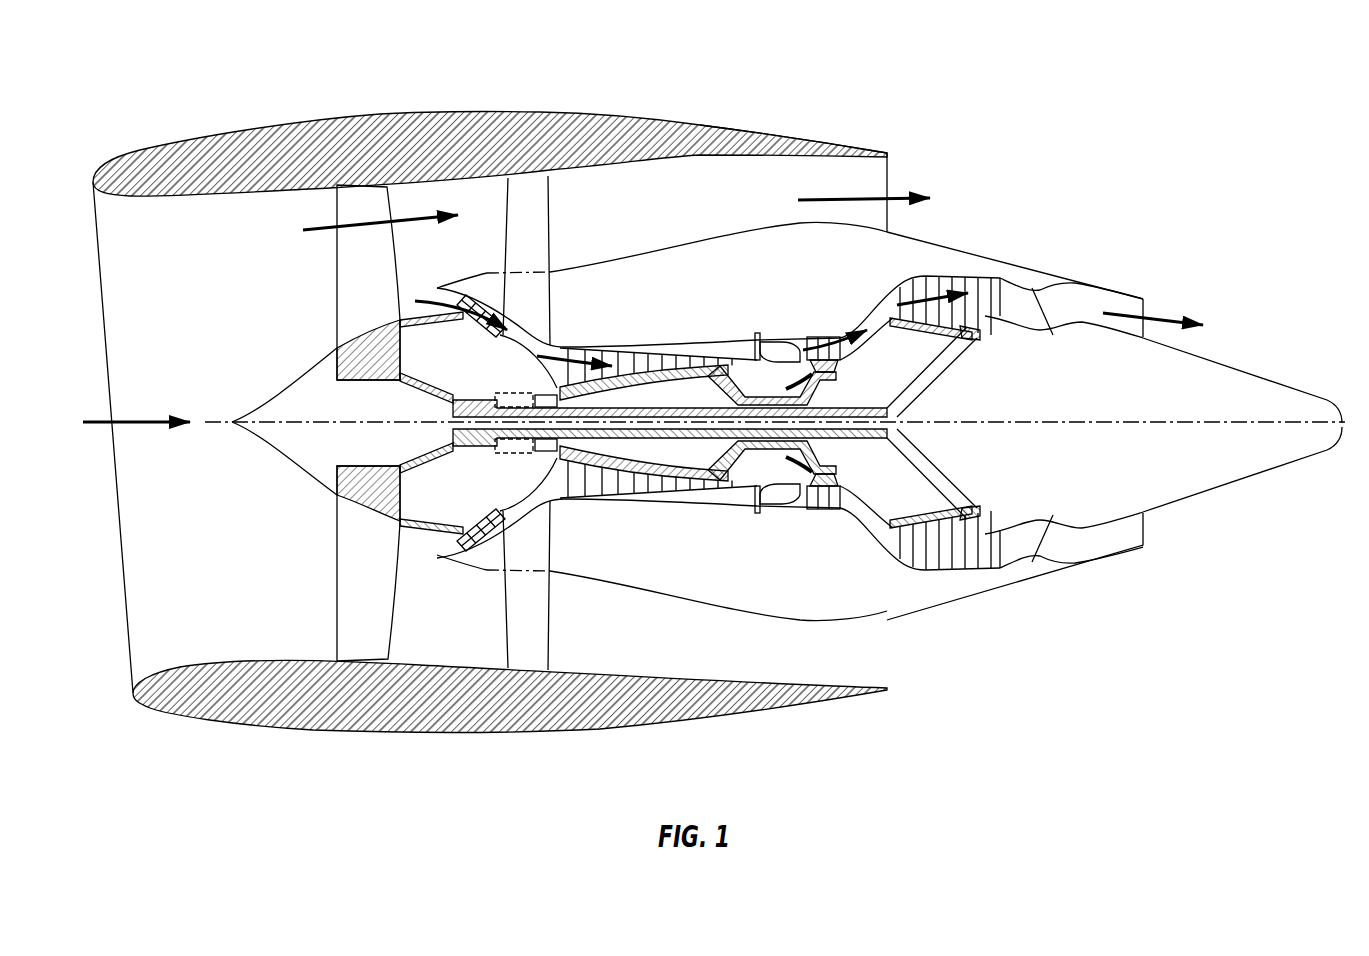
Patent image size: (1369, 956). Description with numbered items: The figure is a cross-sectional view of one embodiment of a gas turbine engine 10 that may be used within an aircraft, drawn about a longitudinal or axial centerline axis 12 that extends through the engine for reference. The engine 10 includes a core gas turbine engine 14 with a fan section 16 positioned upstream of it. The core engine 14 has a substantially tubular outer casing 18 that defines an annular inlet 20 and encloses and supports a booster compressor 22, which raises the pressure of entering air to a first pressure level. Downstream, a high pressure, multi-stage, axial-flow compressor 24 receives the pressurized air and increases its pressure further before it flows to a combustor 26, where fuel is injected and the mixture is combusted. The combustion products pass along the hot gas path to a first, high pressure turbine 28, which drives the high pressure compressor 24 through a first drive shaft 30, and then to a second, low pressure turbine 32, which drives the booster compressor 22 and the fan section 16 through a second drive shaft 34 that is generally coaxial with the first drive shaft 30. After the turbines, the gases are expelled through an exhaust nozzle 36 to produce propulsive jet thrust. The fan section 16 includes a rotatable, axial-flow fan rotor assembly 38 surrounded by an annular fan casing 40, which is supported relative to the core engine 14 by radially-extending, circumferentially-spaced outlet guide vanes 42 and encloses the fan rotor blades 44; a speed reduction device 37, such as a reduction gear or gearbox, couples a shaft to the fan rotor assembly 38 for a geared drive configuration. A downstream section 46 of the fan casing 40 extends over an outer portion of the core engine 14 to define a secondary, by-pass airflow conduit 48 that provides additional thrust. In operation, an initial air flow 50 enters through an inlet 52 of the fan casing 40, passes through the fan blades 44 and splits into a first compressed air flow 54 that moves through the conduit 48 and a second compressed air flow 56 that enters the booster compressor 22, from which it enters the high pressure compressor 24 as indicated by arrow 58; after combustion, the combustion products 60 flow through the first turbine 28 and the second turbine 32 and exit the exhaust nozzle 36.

The gas turbine engine 10 is at (1050, 146).
The longitudinal or axial centerline axis 12 is at (1090, 416).
The core gas turbine engine 14 is at (728, 313).
The fan section 16 is at (383, 97).
The outer casing 18 is at (730, 611).
The annular inlet 20 is at (449, 542).
The booster compressor 22 is at (505, 498).
The high pressure compressor 24 is at (583, 493).
The combustor 26 is at (776, 495).
The first (high pressure) turbine 28 is at (833, 497).
The first (high pressure) drive shaft 30 is at (826, 372).
The second (low pressure) turbine 32 is at (988, 562).
The second (low pressure) drive shaft 34 is at (519, 393).
The exhaust nozzle 36 is at (1145, 310).
The speed reduction device 37 is at (527, 454).
The fan rotor assembly 38 is at (400, 378).
The fan casing 40 is at (385, 733).
The outlet guide vanes 42 is at (550, 218).
The fan rotor blades 44 is at (337, 597).
The downstream section of the fan casing 46 is at (790, 129).
The by-pass airflow conduit 48 is at (671, 213).
The initial air flow 50 is at (127, 414).
The inlet 52 is at (133, 668).
The first compressed air flow 54 is at (350, 222).
The second compressed air flow 56 is at (433, 294).
The air flow entering the high pressure compressor 58 is at (577, 347).
The combustion products 60 is at (814, 340).